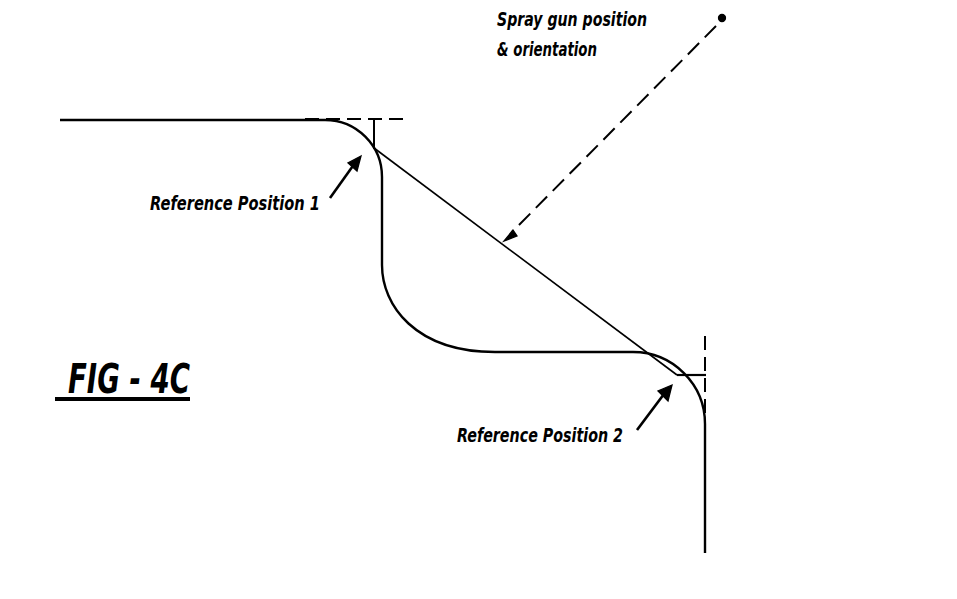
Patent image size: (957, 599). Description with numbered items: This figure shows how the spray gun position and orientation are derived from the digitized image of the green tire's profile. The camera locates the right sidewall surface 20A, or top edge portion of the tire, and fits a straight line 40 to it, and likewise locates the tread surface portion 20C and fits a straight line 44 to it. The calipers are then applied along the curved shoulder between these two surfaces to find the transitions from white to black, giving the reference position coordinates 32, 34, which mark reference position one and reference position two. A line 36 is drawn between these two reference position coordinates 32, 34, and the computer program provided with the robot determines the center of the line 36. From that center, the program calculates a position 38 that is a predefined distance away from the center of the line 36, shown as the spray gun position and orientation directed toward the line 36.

The right sidewall surface 20A is at (170, 118).
The tread surface portion 20C is at (706, 490).
The reference position coordinate 32 is at (378, 150).
The reference position coordinate 34 is at (676, 355).
The line 36 is at (535, 268).
The position 38 is at (728, 16).
The straight line 40 is at (406, 117).
The straight line 44 is at (708, 362).